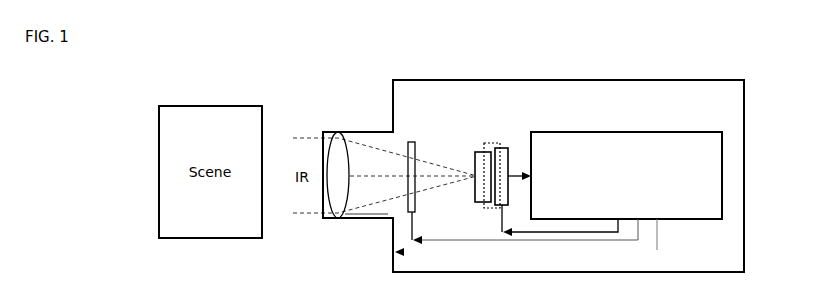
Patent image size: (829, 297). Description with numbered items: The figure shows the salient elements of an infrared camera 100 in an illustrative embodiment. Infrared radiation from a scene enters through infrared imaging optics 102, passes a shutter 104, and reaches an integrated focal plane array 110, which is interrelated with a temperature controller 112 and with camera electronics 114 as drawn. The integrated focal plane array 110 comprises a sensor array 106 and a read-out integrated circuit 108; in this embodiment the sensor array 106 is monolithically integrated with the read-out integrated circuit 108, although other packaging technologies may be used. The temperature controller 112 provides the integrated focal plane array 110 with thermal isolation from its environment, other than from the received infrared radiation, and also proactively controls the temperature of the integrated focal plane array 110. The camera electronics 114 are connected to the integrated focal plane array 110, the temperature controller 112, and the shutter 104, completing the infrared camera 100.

The infrared camera 100 is at (306, 78).
The infrared imaging optics 102 is at (340, 205).
The shutter 104 is at (410, 140).
The sensor array 106 is at (483, 152).
The read-out integrated circuit 108 is at (490, 146).
The integrated focal plane array 110 is at (485, 207).
The temperature controller 112 is at (529, 153).
The camera electronics 114 is at (626, 175).